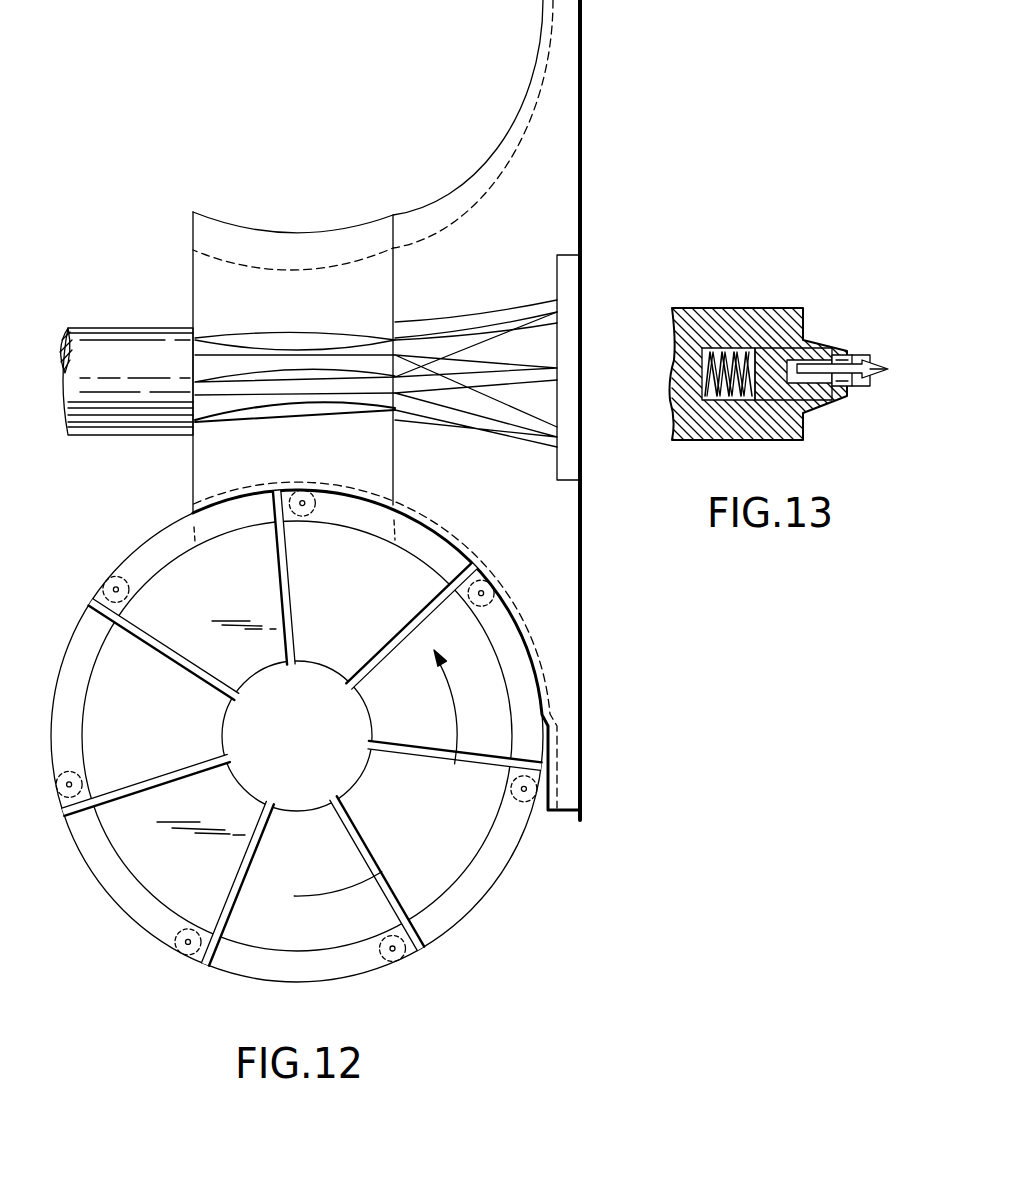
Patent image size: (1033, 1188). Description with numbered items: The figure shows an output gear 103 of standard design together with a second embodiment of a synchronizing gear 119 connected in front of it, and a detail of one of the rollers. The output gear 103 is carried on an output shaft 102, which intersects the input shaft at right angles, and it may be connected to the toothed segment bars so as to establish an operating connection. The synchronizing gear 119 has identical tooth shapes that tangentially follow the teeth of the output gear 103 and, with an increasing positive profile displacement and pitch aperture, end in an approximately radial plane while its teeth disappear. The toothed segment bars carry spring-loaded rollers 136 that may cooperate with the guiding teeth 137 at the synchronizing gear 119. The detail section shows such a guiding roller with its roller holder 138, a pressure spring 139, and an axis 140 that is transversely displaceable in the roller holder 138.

In FIG. 12, the output shaft 102 is at (126, 343).
In FIG. 12, the output gear 103 is at (241, 287).
In FIG. 12, the synchronizing gear 119 is at (492, 98).
In FIG. 12, the guiding teeth 137 is at (448, 200).
In FIG. 12, the spring-loaded roller 136 is at (406, 960).
In FIG. 13, the spring-loaded roller 136 is at (825, 352).
In FIG. 13, the roller holder 138 is at (767, 358).
In FIG. 13, the pressure spring 139 is at (732, 348).
In FIG. 13, the axis 140 is at (842, 350).